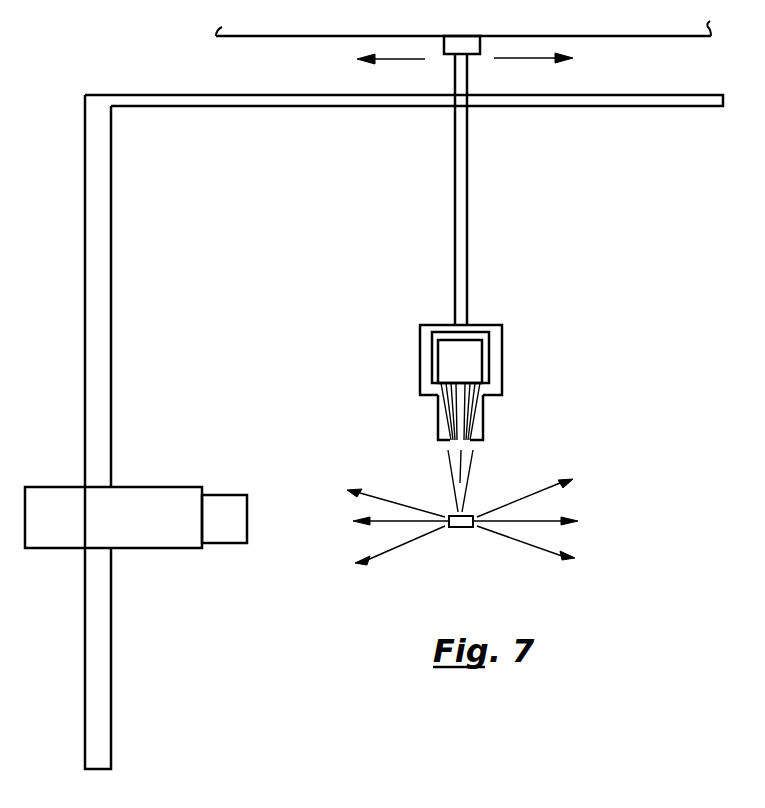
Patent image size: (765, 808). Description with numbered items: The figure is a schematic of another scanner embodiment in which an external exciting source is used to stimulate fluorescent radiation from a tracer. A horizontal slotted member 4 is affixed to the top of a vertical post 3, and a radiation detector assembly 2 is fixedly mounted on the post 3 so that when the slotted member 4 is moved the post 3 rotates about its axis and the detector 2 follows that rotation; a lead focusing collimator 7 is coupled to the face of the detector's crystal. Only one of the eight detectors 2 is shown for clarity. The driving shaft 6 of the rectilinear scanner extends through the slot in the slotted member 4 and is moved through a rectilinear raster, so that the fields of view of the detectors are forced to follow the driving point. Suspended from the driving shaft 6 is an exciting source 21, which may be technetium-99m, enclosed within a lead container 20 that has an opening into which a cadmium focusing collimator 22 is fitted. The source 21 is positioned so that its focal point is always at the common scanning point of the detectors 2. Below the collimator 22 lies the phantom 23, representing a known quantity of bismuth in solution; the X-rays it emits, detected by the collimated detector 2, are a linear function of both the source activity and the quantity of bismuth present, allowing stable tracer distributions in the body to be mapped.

The radiation detector assembly 2 is at (102, 531).
The post 3 is at (95, 346).
The slotted member 4 is at (366, 100).
The driving shaft 6 is at (463, 238).
The lead focusing collimator 7 is at (218, 500).
The lead container 20 is at (503, 343).
The exciting source 21 is at (448, 359).
The cadmium focusing collimator 22 is at (478, 429).
The phantom 23 is at (465, 527).